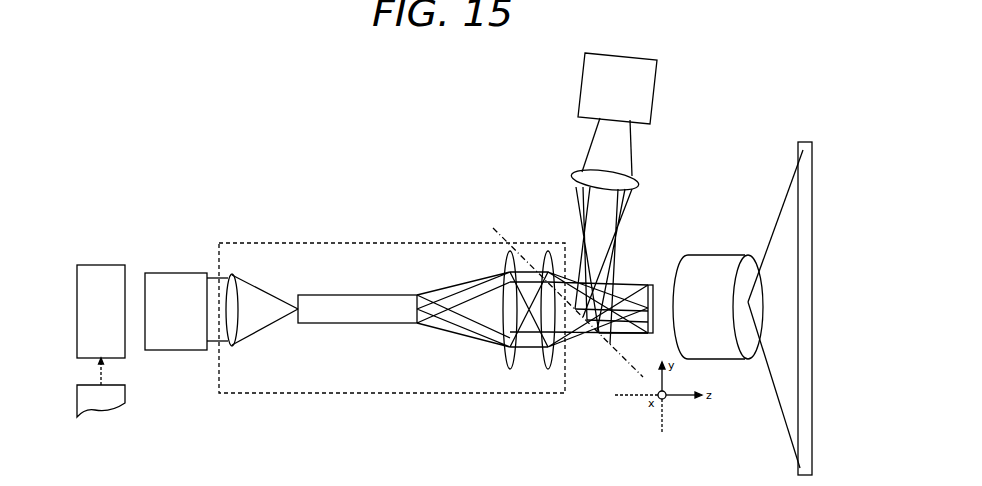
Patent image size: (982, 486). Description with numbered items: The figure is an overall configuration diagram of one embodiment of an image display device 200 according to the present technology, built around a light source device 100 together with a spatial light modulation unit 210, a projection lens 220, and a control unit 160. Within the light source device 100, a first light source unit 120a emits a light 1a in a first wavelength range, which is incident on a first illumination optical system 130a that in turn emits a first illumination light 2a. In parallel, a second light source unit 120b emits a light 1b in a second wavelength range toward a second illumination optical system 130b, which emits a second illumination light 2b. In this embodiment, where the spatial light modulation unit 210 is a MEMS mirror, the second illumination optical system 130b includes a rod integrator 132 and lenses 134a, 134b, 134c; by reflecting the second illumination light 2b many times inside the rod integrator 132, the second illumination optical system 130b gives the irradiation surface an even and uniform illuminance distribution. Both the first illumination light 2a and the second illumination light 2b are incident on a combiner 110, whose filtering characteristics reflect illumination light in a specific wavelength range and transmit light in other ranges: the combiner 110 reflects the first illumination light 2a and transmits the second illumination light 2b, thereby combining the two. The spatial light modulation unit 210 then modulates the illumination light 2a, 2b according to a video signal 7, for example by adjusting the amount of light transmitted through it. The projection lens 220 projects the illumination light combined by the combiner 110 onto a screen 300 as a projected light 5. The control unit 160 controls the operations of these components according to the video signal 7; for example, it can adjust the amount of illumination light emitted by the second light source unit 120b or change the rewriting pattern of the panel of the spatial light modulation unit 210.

The image display device 200 is at (197, 169).
The light source device 100 is at (219, 212).
The control unit 160 is at (126, 270).
The video signal 7 is at (125, 397).
The second light source unit 120b is at (170, 272).
The second illumination optical system 130b is at (352, 242).
The lens 134a is at (233, 274).
The light in a second wavelength range 1b is at (230, 361).
The rod integrator 132 is at (353, 295).
The lens 134b is at (503, 357).
The lens 134c is at (543, 367).
The second illumination light 2b is at (534, 248).
The first light source unit 120a is at (655, 103).
The light in a first wavelength range 1a is at (646, 146).
The first illumination optical system 130a is at (640, 177).
The first illumination light 2a is at (641, 229).
The combiner 110 is at (620, 353).
The spatial light modulation unit 210 is at (651, 282).
The projection lens 220 is at (699, 255).
The projected light 5 is at (769, 217).
The screen 300 is at (798, 457).